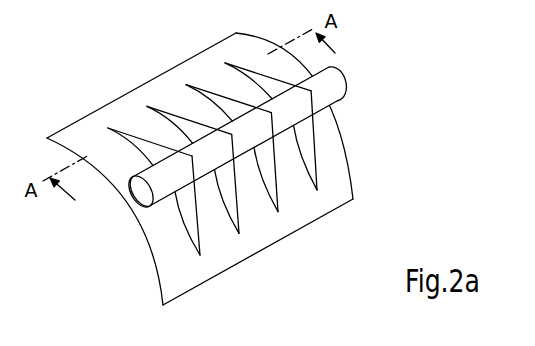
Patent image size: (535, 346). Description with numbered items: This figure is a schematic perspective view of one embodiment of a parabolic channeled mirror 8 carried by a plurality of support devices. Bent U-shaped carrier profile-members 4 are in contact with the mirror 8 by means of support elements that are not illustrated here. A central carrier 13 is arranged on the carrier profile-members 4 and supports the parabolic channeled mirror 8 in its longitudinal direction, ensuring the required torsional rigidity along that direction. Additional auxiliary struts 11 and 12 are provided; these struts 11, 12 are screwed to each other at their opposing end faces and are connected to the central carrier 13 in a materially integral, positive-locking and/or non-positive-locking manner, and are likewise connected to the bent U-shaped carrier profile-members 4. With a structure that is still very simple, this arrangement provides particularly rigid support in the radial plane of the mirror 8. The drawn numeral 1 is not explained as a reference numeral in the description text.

The tooth / blade 1 is at (112, 144).
The bent U-shaped carrier profile-member 4 is at (183, 211).
The parabolic channeled mirror 8 is at (160, 263).
The auxiliary strut 11 is at (200, 222).
The auxiliary strut 12 is at (143, 136).
The central carrier 13 is at (338, 85).